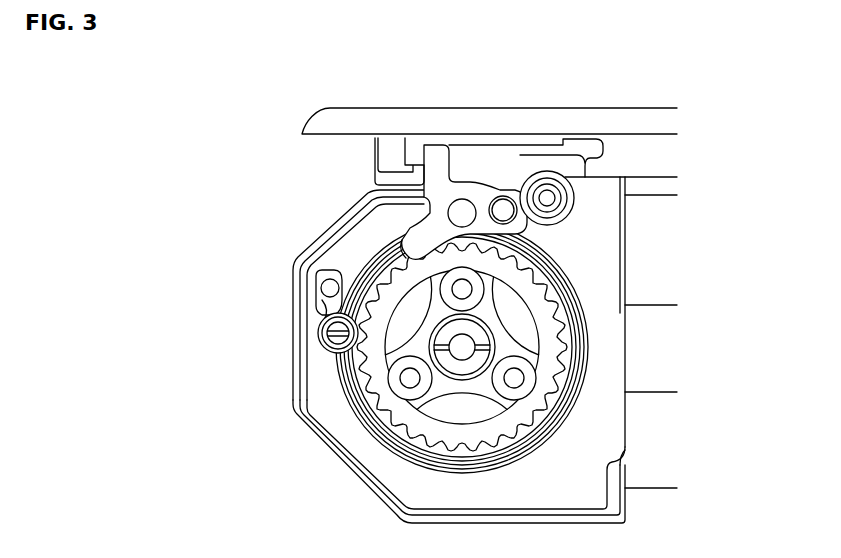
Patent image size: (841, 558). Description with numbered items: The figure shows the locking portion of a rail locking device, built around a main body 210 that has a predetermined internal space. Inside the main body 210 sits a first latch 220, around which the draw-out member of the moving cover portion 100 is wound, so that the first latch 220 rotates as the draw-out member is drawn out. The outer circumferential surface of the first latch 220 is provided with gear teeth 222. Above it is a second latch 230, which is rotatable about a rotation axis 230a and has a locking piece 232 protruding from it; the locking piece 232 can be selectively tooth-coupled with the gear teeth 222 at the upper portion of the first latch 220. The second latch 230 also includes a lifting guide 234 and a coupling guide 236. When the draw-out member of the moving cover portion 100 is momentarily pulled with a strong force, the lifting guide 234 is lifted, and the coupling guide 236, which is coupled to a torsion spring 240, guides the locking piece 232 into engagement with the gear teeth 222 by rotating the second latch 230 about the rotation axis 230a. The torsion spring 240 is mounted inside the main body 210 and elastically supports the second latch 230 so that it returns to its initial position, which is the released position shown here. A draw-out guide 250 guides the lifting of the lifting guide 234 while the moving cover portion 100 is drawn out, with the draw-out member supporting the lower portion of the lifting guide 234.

The moving cover portion 100 is at (608, 178).
The main body 210 is at (337, 412).
The first latch 220 is at (557, 355).
The gear teeth 222 is at (557, 315).
The second latch 230 is at (402, 235).
The rotation axis 230a is at (462, 207).
The locking piece 232 is at (367, 252).
The lifting guide 234 is at (504, 199).
The coupling guide 236 is at (322, 270).
The torsion spring 240 is at (320, 333).
The draw-out guide 250 is at (544, 186).